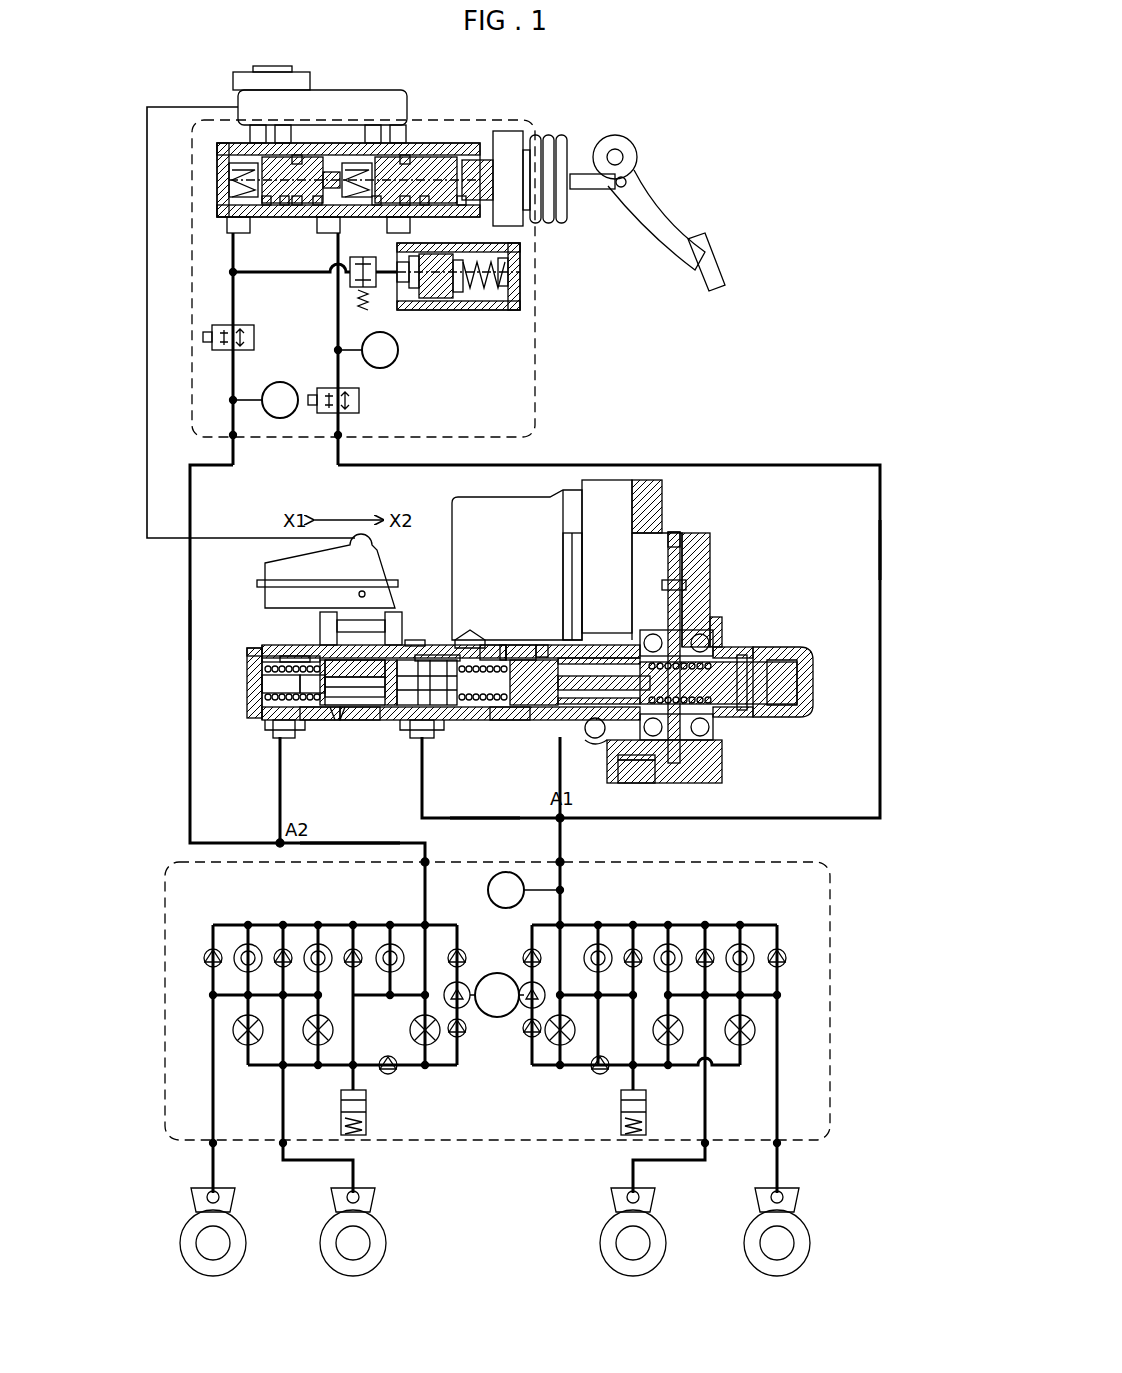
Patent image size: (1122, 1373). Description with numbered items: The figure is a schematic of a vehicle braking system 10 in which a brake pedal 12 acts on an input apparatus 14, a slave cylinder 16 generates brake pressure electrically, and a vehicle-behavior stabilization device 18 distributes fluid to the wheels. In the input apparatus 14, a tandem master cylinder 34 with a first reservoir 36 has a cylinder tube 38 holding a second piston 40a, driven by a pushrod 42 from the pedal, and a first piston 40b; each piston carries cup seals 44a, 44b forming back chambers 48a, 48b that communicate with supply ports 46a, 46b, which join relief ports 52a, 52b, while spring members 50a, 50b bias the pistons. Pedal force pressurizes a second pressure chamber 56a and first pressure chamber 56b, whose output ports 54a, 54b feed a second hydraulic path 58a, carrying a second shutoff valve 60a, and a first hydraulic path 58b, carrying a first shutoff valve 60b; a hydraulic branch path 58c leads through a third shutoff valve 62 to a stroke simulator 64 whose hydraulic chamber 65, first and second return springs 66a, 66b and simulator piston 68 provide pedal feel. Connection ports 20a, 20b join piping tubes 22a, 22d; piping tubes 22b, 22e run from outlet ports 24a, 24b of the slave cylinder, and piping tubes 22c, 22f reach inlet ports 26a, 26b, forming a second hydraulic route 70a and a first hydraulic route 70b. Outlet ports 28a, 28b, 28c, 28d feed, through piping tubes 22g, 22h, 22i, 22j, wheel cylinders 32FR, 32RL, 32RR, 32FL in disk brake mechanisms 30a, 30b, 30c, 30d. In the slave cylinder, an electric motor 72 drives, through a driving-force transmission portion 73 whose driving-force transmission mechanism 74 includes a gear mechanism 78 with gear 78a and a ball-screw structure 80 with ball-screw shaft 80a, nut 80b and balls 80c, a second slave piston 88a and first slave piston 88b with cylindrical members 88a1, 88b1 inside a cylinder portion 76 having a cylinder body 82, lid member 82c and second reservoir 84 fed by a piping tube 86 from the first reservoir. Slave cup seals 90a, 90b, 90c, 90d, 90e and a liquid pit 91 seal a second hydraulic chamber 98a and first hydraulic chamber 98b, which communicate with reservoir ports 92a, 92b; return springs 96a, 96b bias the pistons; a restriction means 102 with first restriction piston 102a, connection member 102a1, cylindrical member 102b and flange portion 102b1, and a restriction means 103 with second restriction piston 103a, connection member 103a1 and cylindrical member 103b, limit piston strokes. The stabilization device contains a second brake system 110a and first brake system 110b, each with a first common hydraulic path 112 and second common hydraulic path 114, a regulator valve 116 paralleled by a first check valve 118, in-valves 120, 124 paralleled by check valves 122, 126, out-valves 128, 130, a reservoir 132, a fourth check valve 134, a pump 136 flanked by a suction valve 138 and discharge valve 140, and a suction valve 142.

The vehicle braking system 10 is at (665, 100).
The brake pedal 12 is at (722, 257).
The input apparatus 14 is at (540, 340).
The slave cylinder 16 is at (702, 515).
The vehicle-behavior stabilization device 18 is at (725, 862).
The connection port 20a is at (332, 446).
The connection port 20b is at (238, 447).
The first piping tube 22a is at (880, 555).
The second piping tube 22b is at (440, 818).
The third piping tube 22c is at (563, 832).
The fourth piping tube 22d is at (190, 630).
The fifth piping tube 22e is at (280, 790).
The sixth piping tube 22f is at (355, 843).
The seventh piping tube 22g is at (778, 1175).
The eighth piping tube 22h is at (633, 1170).
The ninth piping tube 22i is at (353, 1170).
The tenth piping tube 22j is at (213, 1175).
The outlet port 24a is at (425, 738).
The outlet port 24b is at (278, 736).
The inlet port 26a is at (565, 862).
The inlet port 26b is at (430, 860).
The first outlet port 28a is at (779, 1145).
The second outlet port 28b is at (705, 1145).
The third outlet port 28c is at (283, 1145).
The fourth outlet port 28d is at (210, 1143).
The disk brake mechanism 30a is at (812, 1256).
The disk brake mechanism 30b is at (668, 1256).
The disk brake mechanism 30c is at (388, 1256).
The disk brake mechanism 30d is at (248, 1256).
The wheel cylinder 32FL is at (234, 1202).
The wheel cylinder 32RR is at (374, 1202).
The wheel cylinder 32RL is at (654, 1202).
The wheel cylinder 32FR is at (798, 1202).
The master cylinder 34 is at (440, 143).
The first reservoir 36 is at (322, 95).
The cylinder tube 38 is at (462, 140).
The second piston 40a is at (430, 160).
The first piston 40b is at (285, 160).
The pushrod 42 is at (510, 170).
The cup seal 44a is at (318, 206).
The cup seal 44b is at (268, 206).
The supply port 46a is at (405, 153).
The supply port 46b is at (298, 153).
The back chamber 48a is at (427, 206).
The back chamber 48b is at (285, 206).
The spring member 50a is at (350, 145).
The spring member 50b is at (235, 146).
The relief port 52a is at (372, 127).
The relief port 52b is at (258, 127).
The output port 54a is at (340, 220).
The output port 54b is at (228, 225).
The second pressure chamber 56a is at (357, 180).
The first pressure chamber 56b is at (243, 180).
The second hydraulic path 58a is at (338, 350).
The first hydraulic path 58b is at (216, 349).
The hydraulic branch path 58c is at (280, 274).
The second shutoff valve 60a is at (362, 410).
The first shutoff valve 60b is at (243, 324).
The third shutoff valve 62 is at (363, 290).
The stroke simulator 64 is at (521, 257).
The hydraulic chamber 65 is at (412, 305).
The first return spring 66a is at (495, 303).
The second return spring 66b is at (462, 303).
The simulator piston 68 is at (430, 303).
The second hydraulic route 70a is at (635, 452).
The first hydraulic route 70b is at (185, 680).
The electric motor 72 is at (490, 497).
The driving-force transmission portion 73 is at (815, 700).
The driving-force transmission mechanism 74 is at (790, 590).
The cylinder portion 76 is at (332, 706).
The gear mechanism 78 is at (720, 618).
The gear 78a is at (675, 535).
The ball-screw structure 80 is at (752, 655).
The ball-screw shaft 80a is at (790, 706).
The ball 80b is at (732, 649).
The ball screw structure 80c is at (742, 706).
The cylinder body 82 is at (450, 706).
The lid member 82c is at (250, 700).
The second reservoir 84 is at (263, 572).
The piping tube 86 is at (147, 347).
The second slave piston 88a is at (560, 720).
The second cylindrical member 88a1 is at (636, 783).
The first slave piston 88b is at (395, 706).
The first cylindrical member 88b1 is at (385, 706).
The slave cup seal 90a is at (530, 706).
The slave cup seal 90b is at (520, 706).
The slave cup seal 90c is at (355, 706).
The slave cup seal 90d is at (320, 706).
The slave cup seal 90e is at (585, 650).
The liquid pit 91 is at (595, 739).
The reservoir port 92a is at (388, 612).
The reservoir port 92b is at (322, 622).
The second return spring 96a is at (422, 652).
The first return spring 96b is at (272, 650).
The second hydraulic chamber 98a is at (505, 703).
The first hydraulic chamber 98b is at (268, 718).
The restriction means 102 is at (300, 706).
The first restriction piston 102a is at (290, 648).
The connection member 102a1 is at (415, 640).
The cylindrical member 102b is at (248, 677).
The flange portion 102b1 is at (248, 660).
The restriction means 103 is at (502, 645).
The second restriction piston 103a is at (468, 632).
The connection member 103a1 is at (542, 645).
The cylindrical member 103b is at (494, 706).
The second brake system 110a is at (778, 915).
The first brake system 110b is at (220, 915).
The first common hydraulic path 112 is at (292, 925).
The second common hydraulic path 114 is at (310, 1067).
The regulator valve 116 is at (392, 925).
The first check valve 118 is at (353, 925).
The first in-valve 120 is at (248, 925).
The second check valve 122 is at (207, 950).
The second in-valve 124 is at (318, 925).
The third check valve 126 is at (283, 925).
The first out-valve 128 is at (248, 1046).
The second out-valve 130 is at (334, 1030).
The reservoir 132 is at (367, 1117).
The fourth check valve 134 is at (390, 1075).
The pump 136 is at (466, 1006).
The suction valve 138 is at (468, 1036).
The discharge valve 140 is at (528, 950).
The suction valve 142 is at (432, 1046).